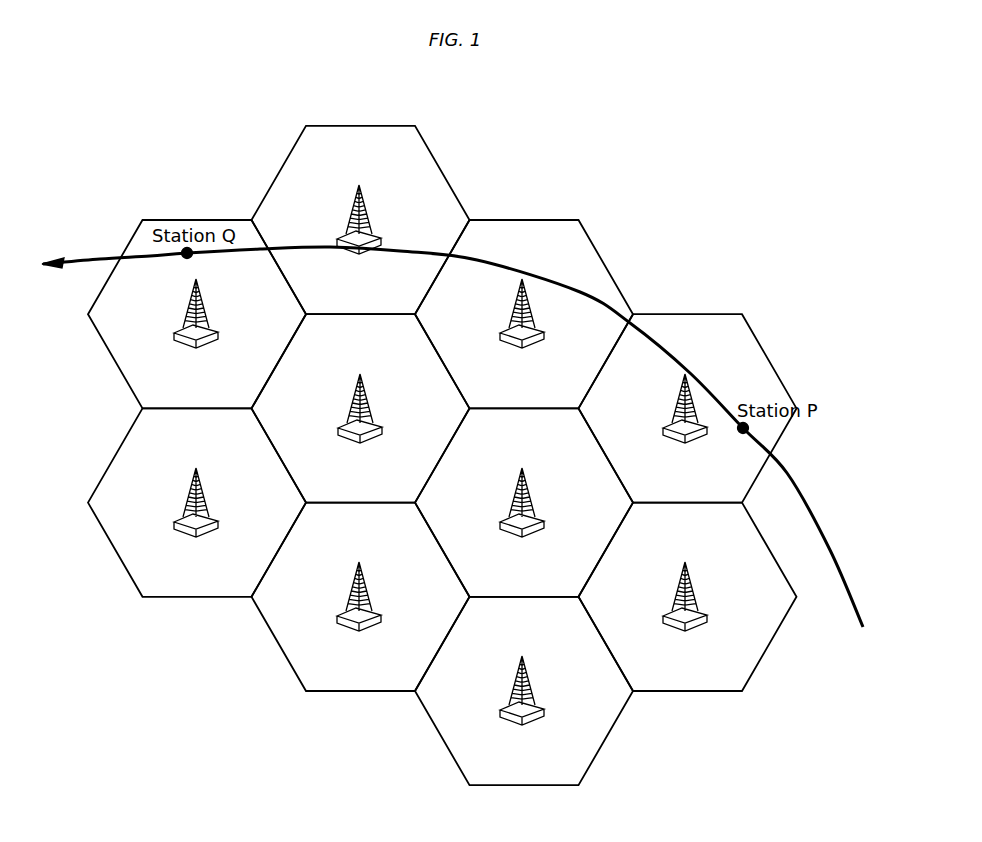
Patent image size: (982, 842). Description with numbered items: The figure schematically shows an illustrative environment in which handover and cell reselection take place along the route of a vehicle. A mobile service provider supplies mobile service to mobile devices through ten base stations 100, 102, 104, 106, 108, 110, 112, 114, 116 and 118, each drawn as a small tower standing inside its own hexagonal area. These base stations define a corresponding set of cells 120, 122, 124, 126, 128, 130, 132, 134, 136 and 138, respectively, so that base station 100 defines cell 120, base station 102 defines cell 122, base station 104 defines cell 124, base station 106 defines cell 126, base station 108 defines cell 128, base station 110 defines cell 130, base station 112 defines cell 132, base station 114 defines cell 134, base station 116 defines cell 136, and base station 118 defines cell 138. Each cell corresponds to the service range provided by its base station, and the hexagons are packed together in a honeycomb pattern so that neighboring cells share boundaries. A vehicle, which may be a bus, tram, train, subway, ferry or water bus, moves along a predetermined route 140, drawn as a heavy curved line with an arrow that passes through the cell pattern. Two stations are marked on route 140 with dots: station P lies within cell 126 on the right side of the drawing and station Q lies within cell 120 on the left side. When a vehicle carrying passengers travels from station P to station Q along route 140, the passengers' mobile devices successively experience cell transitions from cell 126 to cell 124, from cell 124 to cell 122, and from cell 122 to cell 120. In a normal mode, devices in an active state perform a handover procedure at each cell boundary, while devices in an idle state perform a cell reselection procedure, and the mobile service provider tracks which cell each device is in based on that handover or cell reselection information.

The base station 100 is at (208, 308).
The base station 102 is at (372, 213).
The base station 104 is at (536, 318).
The base station 106 is at (674, 400).
The base station 108 is at (211, 499).
The base station 110 is at (373, 402).
The base station 112 is at (537, 497).
The base station 114 is at (699, 592).
The base station 116 is at (373, 592).
The base station 118 is at (535, 686).
The cell 120 is at (178, 220).
The cell 122 is at (361, 125).
The cell 124 is at (525, 220).
The cell 126 is at (695, 314).
The cell 128 is at (113, 555).
The cell 130 is at (313, 416).
The cell 132 is at (580, 525).
The cell 134 is at (768, 650).
The cell 136 is at (277, 648).
The cell 138 is at (441, 742).
The route 140 is at (827, 553).